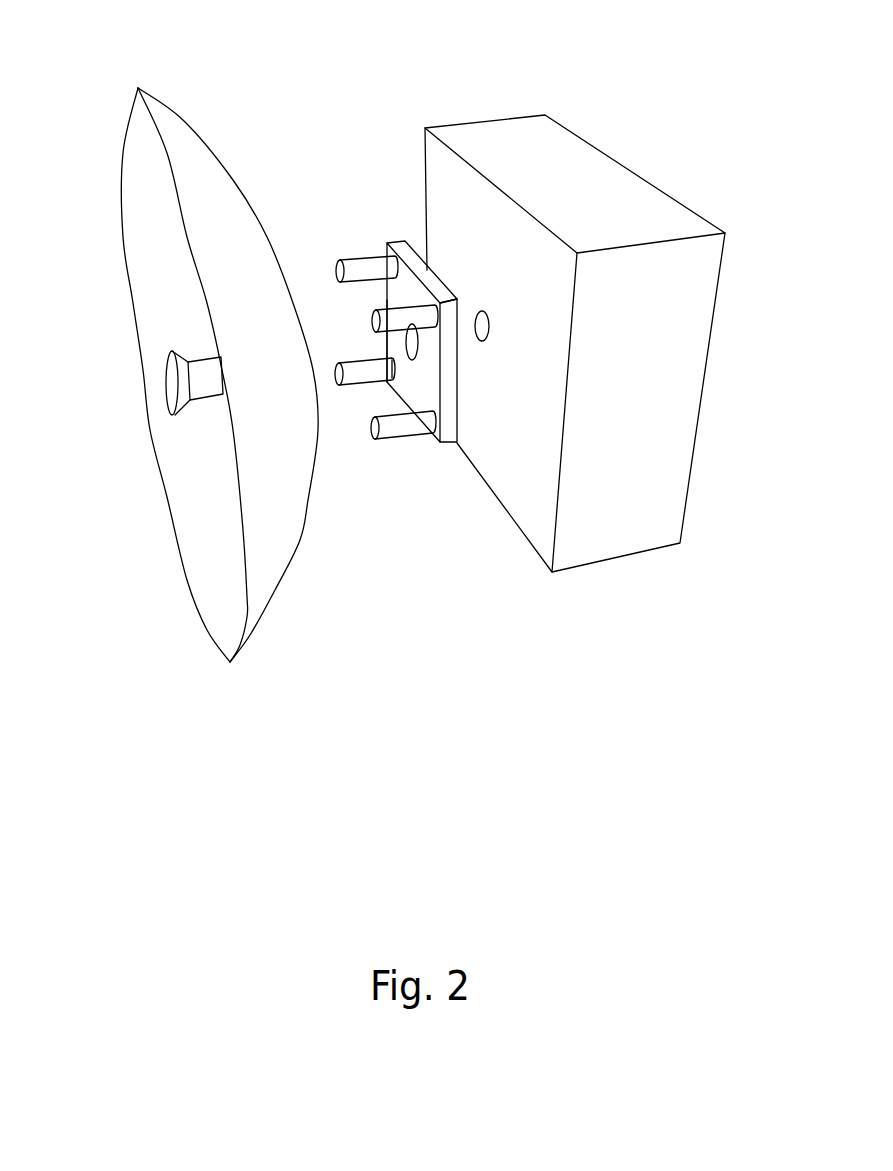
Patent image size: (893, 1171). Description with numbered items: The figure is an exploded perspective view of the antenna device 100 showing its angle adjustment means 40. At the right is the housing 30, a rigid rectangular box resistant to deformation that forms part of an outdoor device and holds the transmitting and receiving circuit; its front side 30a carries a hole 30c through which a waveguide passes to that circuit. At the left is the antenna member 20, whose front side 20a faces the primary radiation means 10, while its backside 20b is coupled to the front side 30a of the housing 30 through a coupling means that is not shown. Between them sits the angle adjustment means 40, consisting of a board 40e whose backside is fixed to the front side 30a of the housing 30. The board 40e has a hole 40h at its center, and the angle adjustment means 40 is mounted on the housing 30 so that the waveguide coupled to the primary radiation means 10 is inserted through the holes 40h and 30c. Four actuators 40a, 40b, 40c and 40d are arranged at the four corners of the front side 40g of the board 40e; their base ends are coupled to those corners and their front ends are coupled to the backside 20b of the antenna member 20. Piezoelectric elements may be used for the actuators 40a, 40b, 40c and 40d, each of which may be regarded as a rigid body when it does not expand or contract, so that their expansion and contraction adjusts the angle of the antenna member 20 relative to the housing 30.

The antenna device 100 is at (328, 775).
The primary radiation means 10 is at (203, 365).
The antenna member 20 is at (218, 427).
The front side of the antenna member 20a is at (200, 555).
The backside of the antenna member 20b is at (280, 513).
The housing 30 is at (600, 346).
The front side of the housing 30a is at (493, 207).
The hole in the front side of the housing 30c is at (490, 338).
The angle adjustment means 40 is at (400, 407).
The actuator 40a is at (372, 260).
The actuator 40b is at (352, 375).
The actuator 40c is at (420, 387).
The actuator 40d is at (455, 445).
The board 40e is at (402, 238).
The front side of the board 40g is at (385, 380).
The hole of the board 40h is at (392, 377).